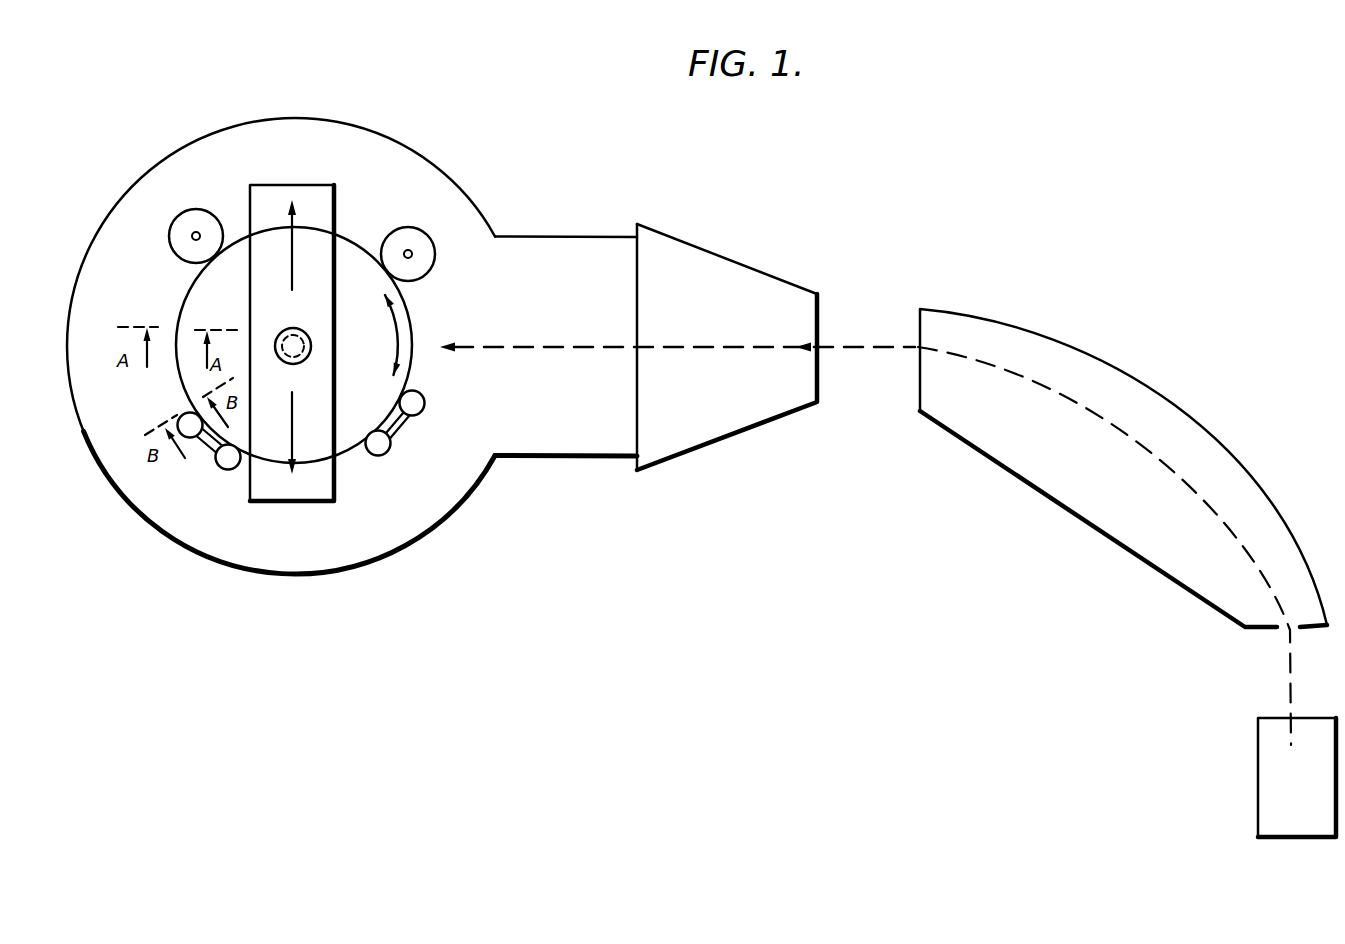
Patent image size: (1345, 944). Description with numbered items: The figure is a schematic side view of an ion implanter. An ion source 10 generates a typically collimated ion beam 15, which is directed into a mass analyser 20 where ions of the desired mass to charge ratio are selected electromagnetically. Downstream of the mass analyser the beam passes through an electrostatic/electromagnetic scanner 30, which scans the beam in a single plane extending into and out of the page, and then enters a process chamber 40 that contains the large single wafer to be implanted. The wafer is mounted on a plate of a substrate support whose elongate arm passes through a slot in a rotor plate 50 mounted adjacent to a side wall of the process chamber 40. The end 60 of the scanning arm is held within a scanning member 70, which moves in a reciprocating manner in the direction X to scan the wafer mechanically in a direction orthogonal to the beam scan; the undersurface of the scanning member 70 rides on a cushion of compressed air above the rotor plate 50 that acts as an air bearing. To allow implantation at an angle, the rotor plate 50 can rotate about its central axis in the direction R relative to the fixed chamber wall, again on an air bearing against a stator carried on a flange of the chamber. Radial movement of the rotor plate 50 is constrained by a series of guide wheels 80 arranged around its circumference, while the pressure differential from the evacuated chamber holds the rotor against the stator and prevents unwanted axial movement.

The ion source 10 is at (1258, 765).
The ion beam 15 is at (1291, 668).
The mass analyser 20 is at (1157, 377).
The electrostatic/electromagnetic scanner 30 is at (714, 253).
The process chamber 40 is at (287, 574).
The rotor plate 50 is at (351, 249).
The end of the scanning arm 60 is at (300, 358).
The scanning member 70 is at (300, 184).
The guide wheels 80 is at (176, 216).